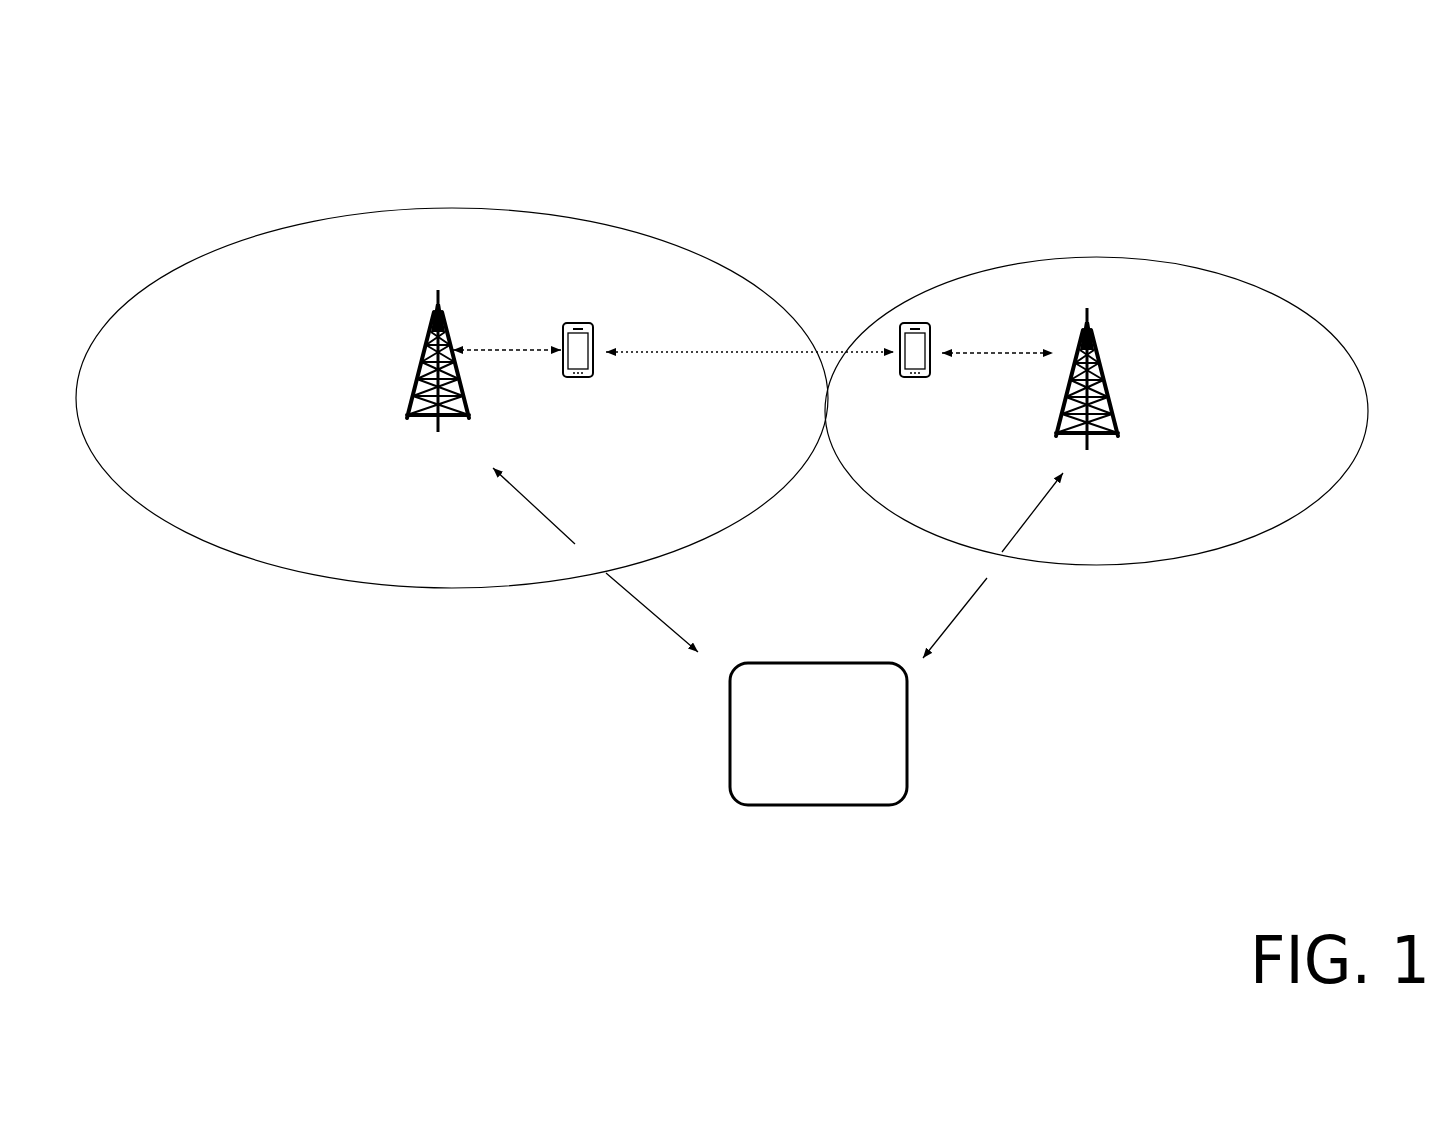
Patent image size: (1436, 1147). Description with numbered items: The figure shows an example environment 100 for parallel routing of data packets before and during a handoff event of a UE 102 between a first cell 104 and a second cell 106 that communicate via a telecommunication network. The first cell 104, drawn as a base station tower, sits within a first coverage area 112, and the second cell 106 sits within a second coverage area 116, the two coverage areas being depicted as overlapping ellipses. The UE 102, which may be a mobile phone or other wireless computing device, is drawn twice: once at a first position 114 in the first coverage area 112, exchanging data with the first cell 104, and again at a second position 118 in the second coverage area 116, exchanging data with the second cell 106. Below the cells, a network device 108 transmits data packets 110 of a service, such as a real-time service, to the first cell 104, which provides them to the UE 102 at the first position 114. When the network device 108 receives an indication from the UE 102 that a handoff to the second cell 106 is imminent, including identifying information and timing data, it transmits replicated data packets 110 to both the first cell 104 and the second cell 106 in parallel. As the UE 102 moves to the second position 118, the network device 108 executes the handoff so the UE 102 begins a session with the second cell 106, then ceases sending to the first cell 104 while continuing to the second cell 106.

The environment 100 is at (205, 86).
The UE 102 is at (585, 323).
The first cell 104 is at (430, 342).
The second cell 106 is at (1096, 354).
The network device 108 is at (836, 770).
The data packets 110 is at (770, 504).
The first coverage area 112 is at (468, 552).
The first position 114 is at (553, 280).
The second coverage area 116 is at (1115, 532).
The second position 118 is at (932, 250).